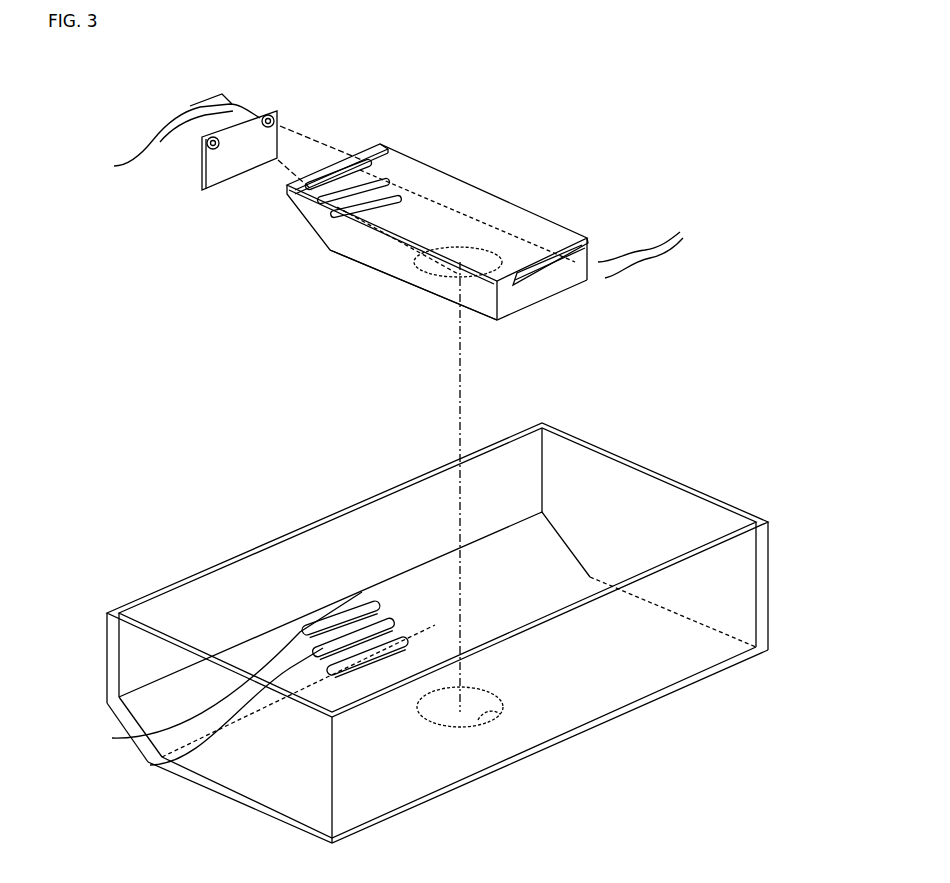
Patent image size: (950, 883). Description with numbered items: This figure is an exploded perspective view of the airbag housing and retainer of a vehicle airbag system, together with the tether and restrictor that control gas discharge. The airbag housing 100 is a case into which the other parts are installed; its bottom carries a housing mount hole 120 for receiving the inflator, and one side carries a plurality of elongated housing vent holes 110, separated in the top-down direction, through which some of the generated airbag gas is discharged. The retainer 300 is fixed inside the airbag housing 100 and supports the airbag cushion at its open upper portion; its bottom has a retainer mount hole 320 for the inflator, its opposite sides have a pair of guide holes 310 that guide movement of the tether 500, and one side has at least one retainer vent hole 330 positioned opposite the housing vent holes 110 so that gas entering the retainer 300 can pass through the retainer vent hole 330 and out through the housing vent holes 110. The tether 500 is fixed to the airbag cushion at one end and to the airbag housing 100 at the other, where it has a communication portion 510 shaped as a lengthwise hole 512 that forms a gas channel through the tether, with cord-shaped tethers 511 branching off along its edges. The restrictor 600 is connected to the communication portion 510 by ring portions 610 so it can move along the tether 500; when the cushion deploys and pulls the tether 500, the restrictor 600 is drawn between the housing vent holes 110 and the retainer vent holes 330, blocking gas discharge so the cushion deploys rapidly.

The airbag housing 100 is at (730, 500).
The housing vent hole 110 is at (135, 741).
The housing mount hole 120 is at (503, 722).
The retainer 300 is at (490, 182).
The guide hole 310 is at (368, 150).
The retainer mount hole 320 is at (402, 282).
The retainer vent hole 330 is at (325, 232).
The tether 500 is at (600, 260).
The communication portion 510 is at (303, 134).
The cord-shaped tether 511 is at (262, 76).
The hole 512 is at (205, 101).
The restrictor 600 is at (198, 180).
The ring portion 610 is at (192, 152).